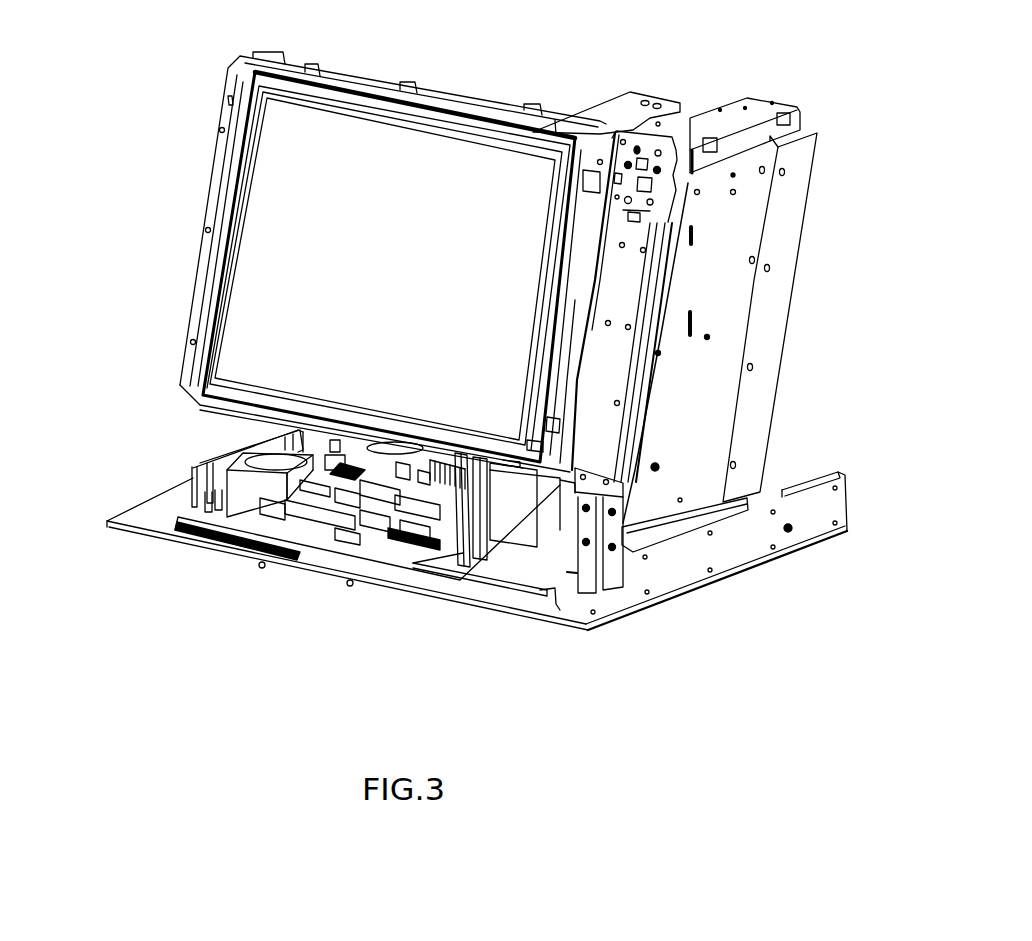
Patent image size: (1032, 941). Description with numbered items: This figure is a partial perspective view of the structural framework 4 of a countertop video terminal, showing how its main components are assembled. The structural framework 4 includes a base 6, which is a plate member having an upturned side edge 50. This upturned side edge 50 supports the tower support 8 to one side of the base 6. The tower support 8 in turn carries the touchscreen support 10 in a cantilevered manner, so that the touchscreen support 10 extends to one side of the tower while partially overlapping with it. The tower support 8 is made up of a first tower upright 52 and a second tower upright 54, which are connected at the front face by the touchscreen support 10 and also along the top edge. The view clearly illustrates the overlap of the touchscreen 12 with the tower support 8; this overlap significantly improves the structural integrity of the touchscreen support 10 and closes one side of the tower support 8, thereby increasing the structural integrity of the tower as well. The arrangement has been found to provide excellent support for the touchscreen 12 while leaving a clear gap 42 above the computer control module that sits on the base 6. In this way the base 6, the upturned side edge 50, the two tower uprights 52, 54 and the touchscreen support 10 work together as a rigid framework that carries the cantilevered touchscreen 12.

The touchscreen support 10 is at (465, 100).
The touchscreen 12 is at (295, 241).
The tower support 8 is at (826, 283).
The base 6 is at (328, 592).
The structural framework 4 is at (723, 613).
The clear gap 42 is at (216, 435).
The upturned side edge 50 is at (790, 530).
The first tower upright 52 is at (657, 469).
The second tower upright 54 is at (466, 548).